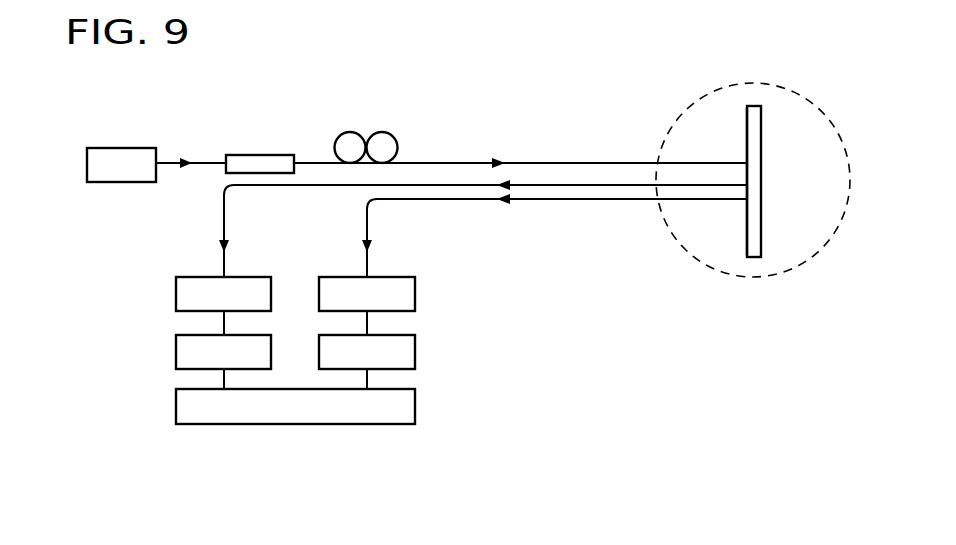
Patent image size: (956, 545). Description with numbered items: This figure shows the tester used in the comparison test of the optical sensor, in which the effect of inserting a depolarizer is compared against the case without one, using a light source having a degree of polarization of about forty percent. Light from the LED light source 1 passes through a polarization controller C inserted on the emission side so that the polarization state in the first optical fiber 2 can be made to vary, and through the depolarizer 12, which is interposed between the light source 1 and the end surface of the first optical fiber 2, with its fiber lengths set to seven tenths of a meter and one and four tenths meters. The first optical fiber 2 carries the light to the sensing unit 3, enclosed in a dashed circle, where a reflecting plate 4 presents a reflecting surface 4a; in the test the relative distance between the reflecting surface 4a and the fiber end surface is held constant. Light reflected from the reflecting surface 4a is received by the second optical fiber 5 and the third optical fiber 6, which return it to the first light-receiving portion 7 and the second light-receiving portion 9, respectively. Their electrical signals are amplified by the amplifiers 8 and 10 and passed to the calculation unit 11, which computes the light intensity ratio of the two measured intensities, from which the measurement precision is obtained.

The light source 1 is at (120, 182).
The depolarizer 12 is at (258, 155).
The polarization controller C is at (351, 131).
The first optical fiber 2 is at (612, 162).
The sensing unit 3 is at (780, 84).
The reflecting plate 4 is at (762, 141).
The reflecting surface 4a is at (747, 131).
The second optical fiber 5 is at (458, 186).
The third optical fiber 6 is at (556, 200).
The first light-receiving portion 7 is at (176, 293).
The amplifier 8 is at (176, 352).
The second light-receiving portion 9 is at (415, 291).
The amplifier 10 is at (415, 351).
The calculation unit 11 is at (415, 407).